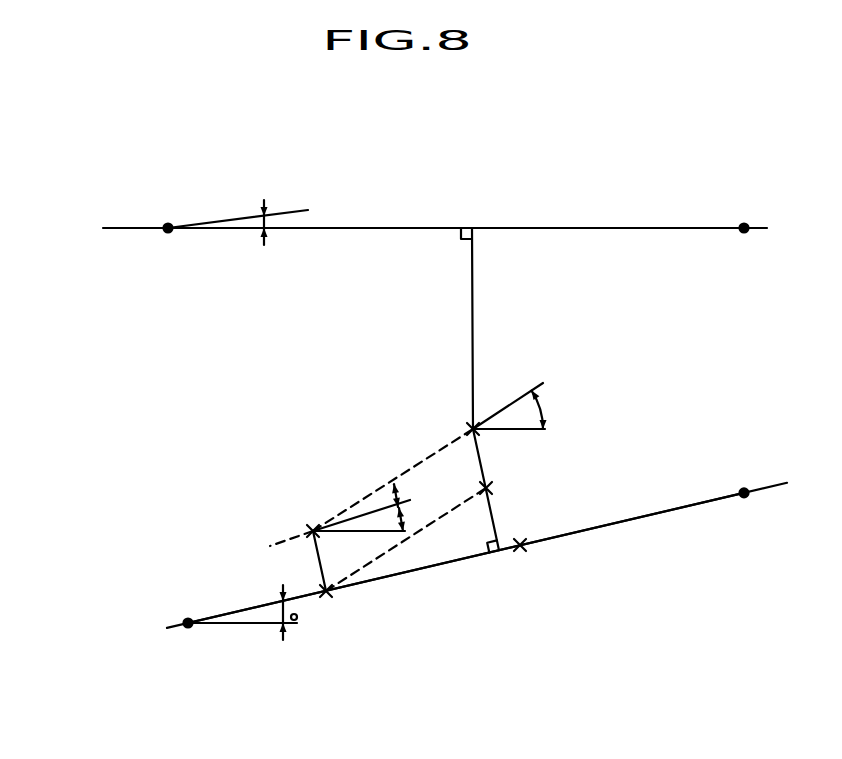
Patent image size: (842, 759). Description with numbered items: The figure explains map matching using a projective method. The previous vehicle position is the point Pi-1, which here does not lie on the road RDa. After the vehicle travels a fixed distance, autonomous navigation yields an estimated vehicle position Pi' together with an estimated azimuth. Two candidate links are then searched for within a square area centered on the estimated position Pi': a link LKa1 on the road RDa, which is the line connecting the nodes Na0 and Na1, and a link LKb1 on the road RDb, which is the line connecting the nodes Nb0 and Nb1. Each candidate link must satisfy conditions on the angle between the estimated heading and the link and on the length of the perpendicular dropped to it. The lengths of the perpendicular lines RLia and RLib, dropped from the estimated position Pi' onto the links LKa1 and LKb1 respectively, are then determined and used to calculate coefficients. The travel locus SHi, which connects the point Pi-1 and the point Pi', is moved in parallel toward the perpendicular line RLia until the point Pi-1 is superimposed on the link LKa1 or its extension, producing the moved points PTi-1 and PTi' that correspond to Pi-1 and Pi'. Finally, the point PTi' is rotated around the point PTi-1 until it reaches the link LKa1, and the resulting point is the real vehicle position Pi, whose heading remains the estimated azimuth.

The road RDb is at (128, 236).
The link LKb1 is at (437, 227).
The node Nb0 is at (168, 226).
The node Nb1 is at (744, 226).
The perpendicular line RLib is at (473, 277).
The estimated vehicle position Pi' is at (557, 383).
The travel locus SHi is at (470, 428).
The moved point PTi' is at (514, 478).
The perpendicular line RLia is at (492, 513).
The real vehicle position Pi is at (578, 585).
The previous vehicle position Pi-1 is at (312, 528).
The moved point PTi-1 is at (328, 595).
The road RDa is at (168, 622).
The link LKa1 is at (675, 512).
The node Na0 is at (188, 628).
The node Na1 is at (745, 495).